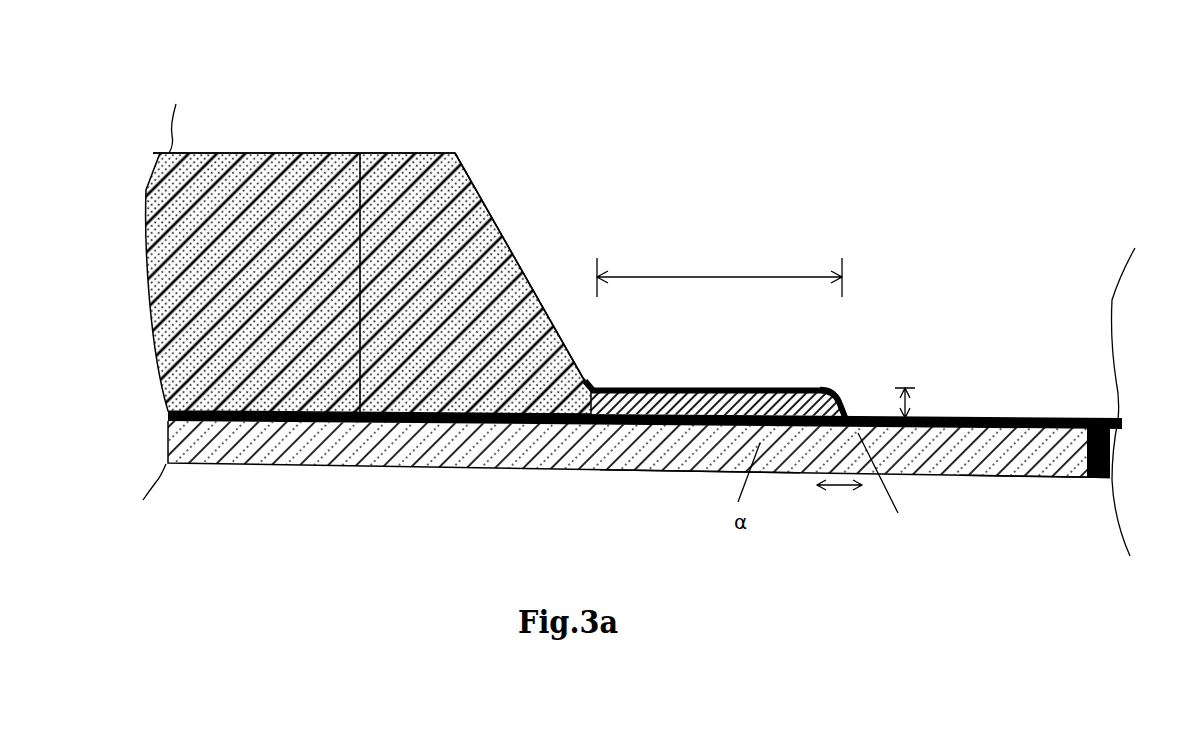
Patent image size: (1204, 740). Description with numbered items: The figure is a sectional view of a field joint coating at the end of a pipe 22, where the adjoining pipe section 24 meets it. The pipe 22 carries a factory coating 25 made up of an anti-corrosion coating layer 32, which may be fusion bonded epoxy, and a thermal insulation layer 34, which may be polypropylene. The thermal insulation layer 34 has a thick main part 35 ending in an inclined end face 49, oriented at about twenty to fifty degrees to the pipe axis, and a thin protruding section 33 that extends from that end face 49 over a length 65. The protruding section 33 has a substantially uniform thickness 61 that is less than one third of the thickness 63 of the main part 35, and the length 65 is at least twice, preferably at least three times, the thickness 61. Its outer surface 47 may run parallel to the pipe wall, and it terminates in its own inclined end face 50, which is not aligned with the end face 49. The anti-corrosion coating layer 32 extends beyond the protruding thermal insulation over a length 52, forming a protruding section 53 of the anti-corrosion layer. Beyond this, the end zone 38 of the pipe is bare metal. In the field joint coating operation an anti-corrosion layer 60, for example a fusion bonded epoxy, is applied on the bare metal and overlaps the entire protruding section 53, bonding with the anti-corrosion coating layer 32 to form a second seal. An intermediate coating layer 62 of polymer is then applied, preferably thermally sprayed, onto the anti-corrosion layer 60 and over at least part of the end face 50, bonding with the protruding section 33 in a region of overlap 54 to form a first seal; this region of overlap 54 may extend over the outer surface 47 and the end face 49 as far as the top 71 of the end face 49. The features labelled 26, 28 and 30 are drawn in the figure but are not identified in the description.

The pipe 22 is at (333, 454).
The pipe section 24 is at (1113, 488).
The coating 25 is at (510, 161).
The conductive layer 26 is at (1038, 418).
The edge region 28 is at (1110, 440).
The bottom surface 30 is at (1090, 478).
The anti-corrosion coating layer 32 is at (445, 454).
The protruding section 33 is at (680, 392).
The thermal insulation layer 34 is at (295, 190).
The main part 35 is at (262, 270).
The end zone 38 is at (1020, 478).
The outer surface 47 is at (772, 387).
The inclined end face 49 is at (522, 250).
The inclined end face 50 is at (842, 402).
The length 52 is at (841, 488).
The protruding section of the anti-corrosion coating layer 53 is at (705, 433).
The region of overlap 54 is at (632, 361).
The anti-corrosion layer 60 is at (918, 477).
The thickness 61 is at (912, 397).
The intermediate coating layer 62 is at (808, 392).
The thickness 63 is at (378, 180).
The length 65 is at (700, 277).
The top 71 is at (455, 153).